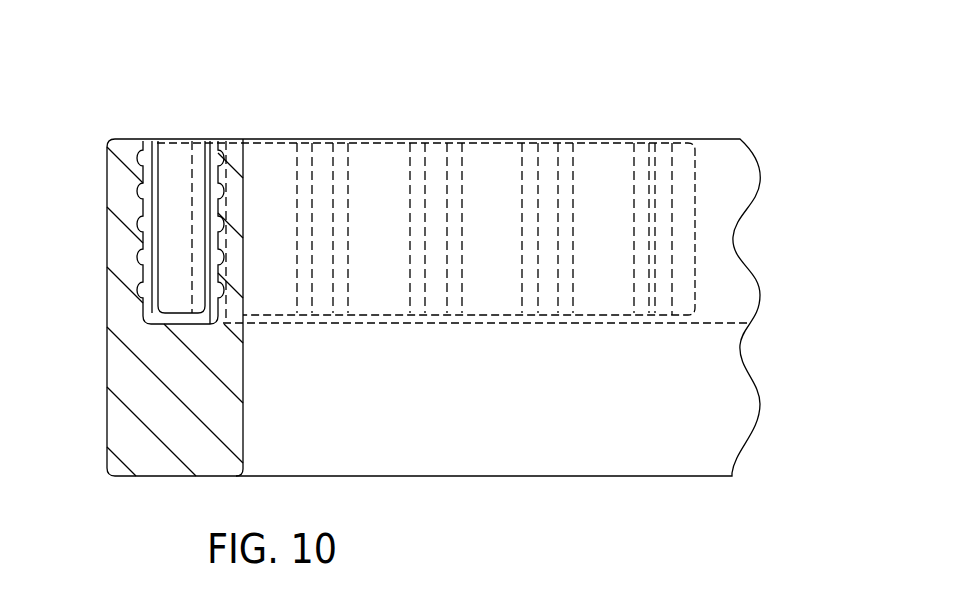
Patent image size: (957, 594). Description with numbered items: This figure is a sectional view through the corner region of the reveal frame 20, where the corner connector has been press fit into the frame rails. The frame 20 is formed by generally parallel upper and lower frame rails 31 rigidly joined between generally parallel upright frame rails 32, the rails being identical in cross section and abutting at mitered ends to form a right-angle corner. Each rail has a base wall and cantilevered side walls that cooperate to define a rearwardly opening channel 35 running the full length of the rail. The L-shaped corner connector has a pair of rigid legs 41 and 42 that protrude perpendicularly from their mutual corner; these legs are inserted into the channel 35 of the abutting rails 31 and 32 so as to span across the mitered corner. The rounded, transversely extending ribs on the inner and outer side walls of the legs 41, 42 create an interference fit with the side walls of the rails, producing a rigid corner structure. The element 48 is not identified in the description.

The reveal frame 20 is at (450, 99).
The upper and lower frame rails 31 is at (458, 457).
The upright frame rails 32 is at (135, 377).
The channel 35 is at (710, 325).
The leg 41 is at (385, 185).
The leg 42 is at (173, 207).
The liner 48 is at (158, 180).